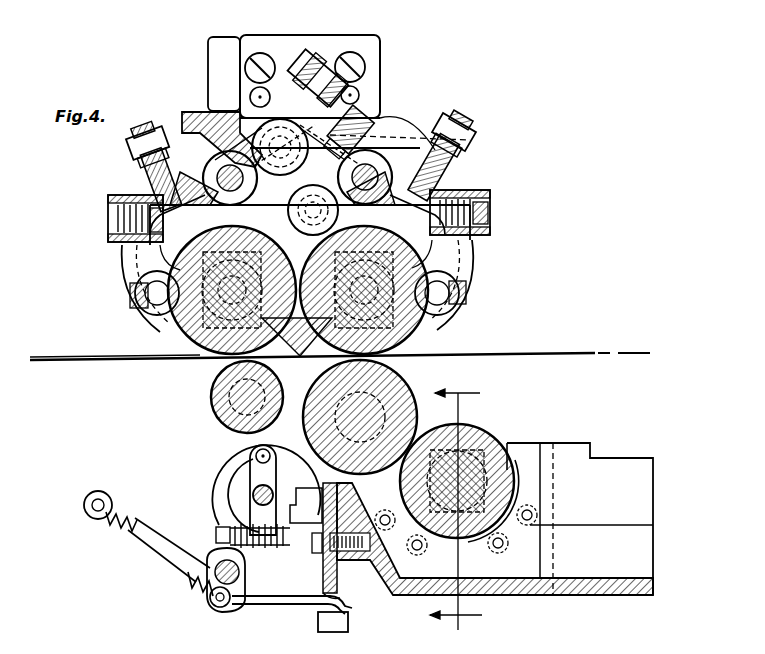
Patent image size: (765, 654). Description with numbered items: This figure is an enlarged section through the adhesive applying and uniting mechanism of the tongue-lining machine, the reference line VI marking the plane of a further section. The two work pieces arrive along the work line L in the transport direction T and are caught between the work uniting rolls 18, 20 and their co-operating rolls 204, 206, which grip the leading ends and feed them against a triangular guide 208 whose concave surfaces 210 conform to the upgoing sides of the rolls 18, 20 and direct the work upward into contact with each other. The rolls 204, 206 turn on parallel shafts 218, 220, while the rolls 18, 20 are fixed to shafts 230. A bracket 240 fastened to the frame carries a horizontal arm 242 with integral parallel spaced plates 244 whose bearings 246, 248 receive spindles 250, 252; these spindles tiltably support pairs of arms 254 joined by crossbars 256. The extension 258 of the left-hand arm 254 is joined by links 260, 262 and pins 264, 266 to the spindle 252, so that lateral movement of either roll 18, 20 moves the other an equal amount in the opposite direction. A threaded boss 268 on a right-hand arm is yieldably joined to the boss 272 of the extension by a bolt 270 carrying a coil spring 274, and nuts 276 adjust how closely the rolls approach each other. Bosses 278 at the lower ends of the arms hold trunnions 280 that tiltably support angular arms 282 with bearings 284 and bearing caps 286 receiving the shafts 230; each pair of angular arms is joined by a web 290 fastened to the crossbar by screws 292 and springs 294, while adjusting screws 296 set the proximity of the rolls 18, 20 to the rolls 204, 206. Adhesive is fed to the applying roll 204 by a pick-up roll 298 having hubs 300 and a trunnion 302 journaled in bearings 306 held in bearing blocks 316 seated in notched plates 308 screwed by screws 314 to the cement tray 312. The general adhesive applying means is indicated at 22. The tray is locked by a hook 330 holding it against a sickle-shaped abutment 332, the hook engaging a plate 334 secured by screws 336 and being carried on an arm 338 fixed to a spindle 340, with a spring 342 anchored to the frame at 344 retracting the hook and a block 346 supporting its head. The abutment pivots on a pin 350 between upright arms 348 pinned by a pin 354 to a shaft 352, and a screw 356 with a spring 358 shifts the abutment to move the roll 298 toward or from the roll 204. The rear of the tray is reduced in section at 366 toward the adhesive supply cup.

The sheet line L is at (95, 358).
The sheet transport direction T is at (537, 338).
The work uniting roll 18 is at (359, 290).
The work uniting roll 20 is at (232, 283).
The adhesive applying means 22 is at (484, 395).
The adhesive applying roll 204 is at (400, 378).
The co-operating roll 206 is at (222, 380).
The triangular guide 208 is at (298, 381).
The concave surfaces 210 is at (327, 293).
The shaft 218 is at (222, 418).
The shaft 220 is at (325, 425).
The shafts 230 is at (175, 333).
The bracket 240 is at (380, 68).
The horizontal arm 242 is at (200, 112).
The parallel spaced plates 244 is at (280, 165).
The bearings 246 is at (232, 180).
The bearings 248 is at (365, 180).
The spindle 250 is at (297, 203).
The spindle 252 is at (403, 207).
The arms 254 is at (135, 262).
The crossbar 256 is at (150, 186).
The extension 258 is at (278, 90).
The link 260 is at (360, 138).
The link 262 is at (327, 263).
The pin 264 is at (225, 74).
The pin 266 is at (299, 212).
The threaded boss 268 is at (420, 148).
The bolt 270 is at (360, 97).
The boss 272 is at (366, 52).
The coil spring 274 is at (370, 123).
The nuts 276 is at (322, 60).
The bosses 278 is at (160, 322).
The trunnions 280 is at (150, 310).
The angular arms 282 is at (117, 282).
The bearings 284 is at (205, 342).
The bearing caps 286 is at (210, 365).
The web 290 is at (120, 198).
The screws 292 is at (108, 212).
The springs 294 is at (110, 228).
The adjusting screws 296 is at (165, 150).
The pick-up roll 298 is at (455, 450).
The hubs 300 is at (695, 645).
The trunnion 302 is at (462, 460).
The bearings 306 is at (495, 448).
The plates 308 is at (540, 450).
The cement tray 312 is at (512, 597).
The screws 314 is at (430, 555).
The bearing blocks 316 is at (584, 517).
The hook 330 is at (285, 606).
The abutment 332 is at (323, 560).
The plate 334 is at (323, 578).
The screws 336 is at (340, 500).
The arm 338 is at (238, 585).
The spindle 340 is at (205, 568).
The spring 342 is at (190, 588).
The frame attachment point 344 is at (100, 492).
The block 346 is at (318, 624).
The upright arms 348 is at (262, 482).
The pin 350 is at (256, 456).
The shaft 352 is at (250, 500).
The pin 354 is at (255, 503).
The screw 356 is at (236, 536).
The spring 358 is at (270, 530).
The reduced portion 366 is at (648, 477).
The section VI is at (475, 393).